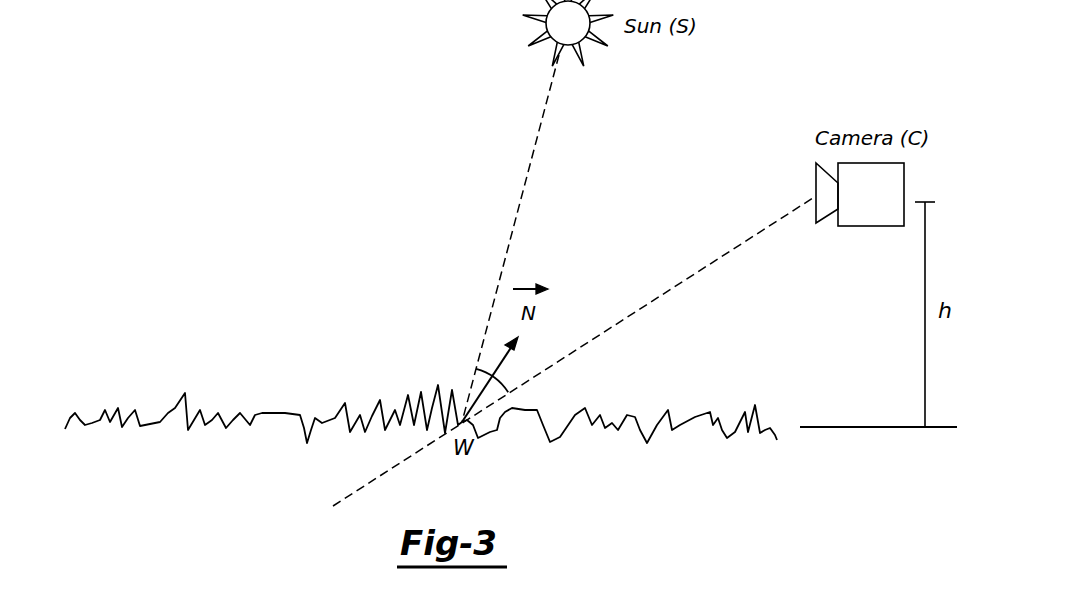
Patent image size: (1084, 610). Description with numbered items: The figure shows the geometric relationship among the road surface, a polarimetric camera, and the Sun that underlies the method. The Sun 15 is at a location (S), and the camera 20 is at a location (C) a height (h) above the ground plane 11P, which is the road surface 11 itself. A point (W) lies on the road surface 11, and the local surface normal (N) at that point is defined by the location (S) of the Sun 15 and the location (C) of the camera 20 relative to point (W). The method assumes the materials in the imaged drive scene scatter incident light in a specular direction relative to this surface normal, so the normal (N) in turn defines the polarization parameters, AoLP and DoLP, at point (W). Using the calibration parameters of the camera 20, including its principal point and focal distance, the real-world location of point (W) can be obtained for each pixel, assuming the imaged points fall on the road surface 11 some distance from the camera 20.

The Sun 15 is at (580, 36).
The camera 20 is at (882, 201).
The road surface 11 is at (683, 410).
The ground plane 11P is at (840, 426).